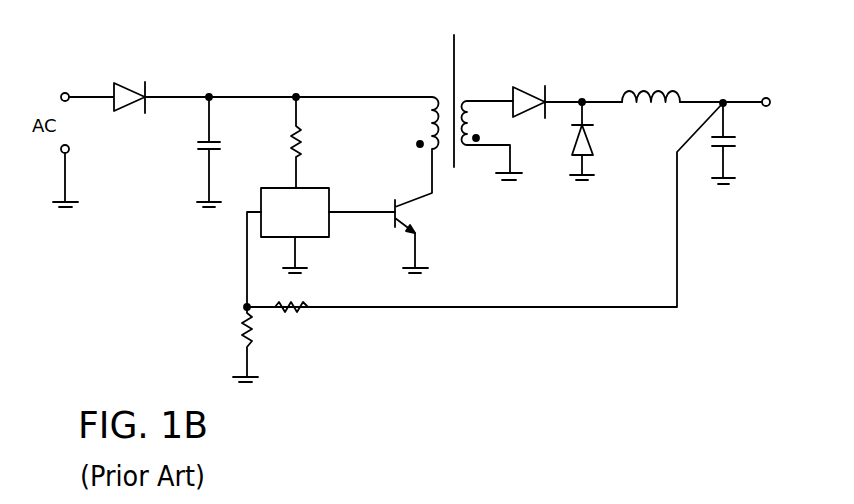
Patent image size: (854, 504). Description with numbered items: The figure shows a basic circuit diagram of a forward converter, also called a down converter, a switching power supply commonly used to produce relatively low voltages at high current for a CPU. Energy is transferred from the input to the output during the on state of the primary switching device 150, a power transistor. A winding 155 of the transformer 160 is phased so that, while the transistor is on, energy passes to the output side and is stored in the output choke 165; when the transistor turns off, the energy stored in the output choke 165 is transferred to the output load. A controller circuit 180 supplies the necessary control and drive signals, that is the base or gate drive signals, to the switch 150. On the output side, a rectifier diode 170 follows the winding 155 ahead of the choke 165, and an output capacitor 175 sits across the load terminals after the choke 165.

The primary switching device 150 is at (418, 213).
The winding 155 is at (488, 123).
The transformer 160 is at (439, 92).
The output choke 165 is at (648, 83).
The rectifier diode 170 is at (530, 82).
The output capacitor 175 is at (738, 140).
The controller circuit 180 is at (295, 212).